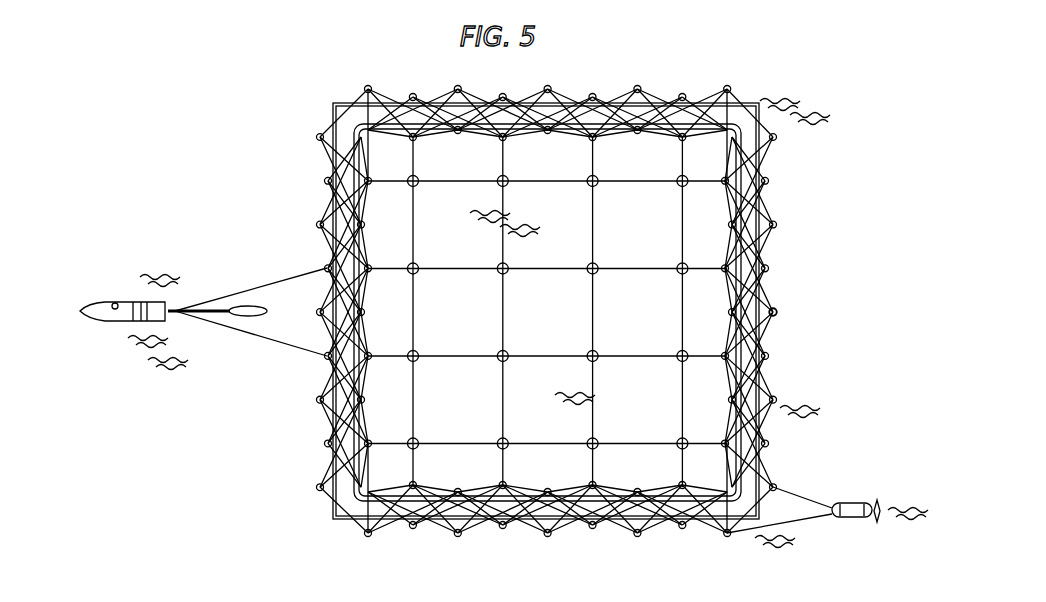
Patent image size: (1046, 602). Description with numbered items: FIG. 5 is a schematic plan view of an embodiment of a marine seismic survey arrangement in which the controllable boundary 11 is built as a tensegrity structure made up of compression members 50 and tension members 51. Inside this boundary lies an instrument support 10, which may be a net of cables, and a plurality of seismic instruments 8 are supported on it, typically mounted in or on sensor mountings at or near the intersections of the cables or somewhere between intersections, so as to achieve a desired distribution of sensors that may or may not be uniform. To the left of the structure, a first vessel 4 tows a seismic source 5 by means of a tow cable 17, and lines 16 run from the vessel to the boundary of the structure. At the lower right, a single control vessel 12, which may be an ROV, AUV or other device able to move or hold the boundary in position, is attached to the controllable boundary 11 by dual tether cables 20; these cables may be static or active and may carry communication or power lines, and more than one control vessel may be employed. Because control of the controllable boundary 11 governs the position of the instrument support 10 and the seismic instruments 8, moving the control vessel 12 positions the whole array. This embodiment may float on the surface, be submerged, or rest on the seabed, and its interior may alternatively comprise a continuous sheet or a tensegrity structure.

The first vessel 4 is at (106, 300).
The seismic source 5 is at (246, 305).
The seismic instruments 8 is at (682, 356).
The instrument support 10 is at (682, 215).
The controllable boundary 11 is at (581, 311).
The control vessel 12 is at (855, 502).
The tow line 16 is at (245, 373).
The tow cable 17 is at (212, 308).
The tether cables 20 is at (788, 492).
The compression members 50 is at (768, 322).
The tension members 51 is at (768, 318).